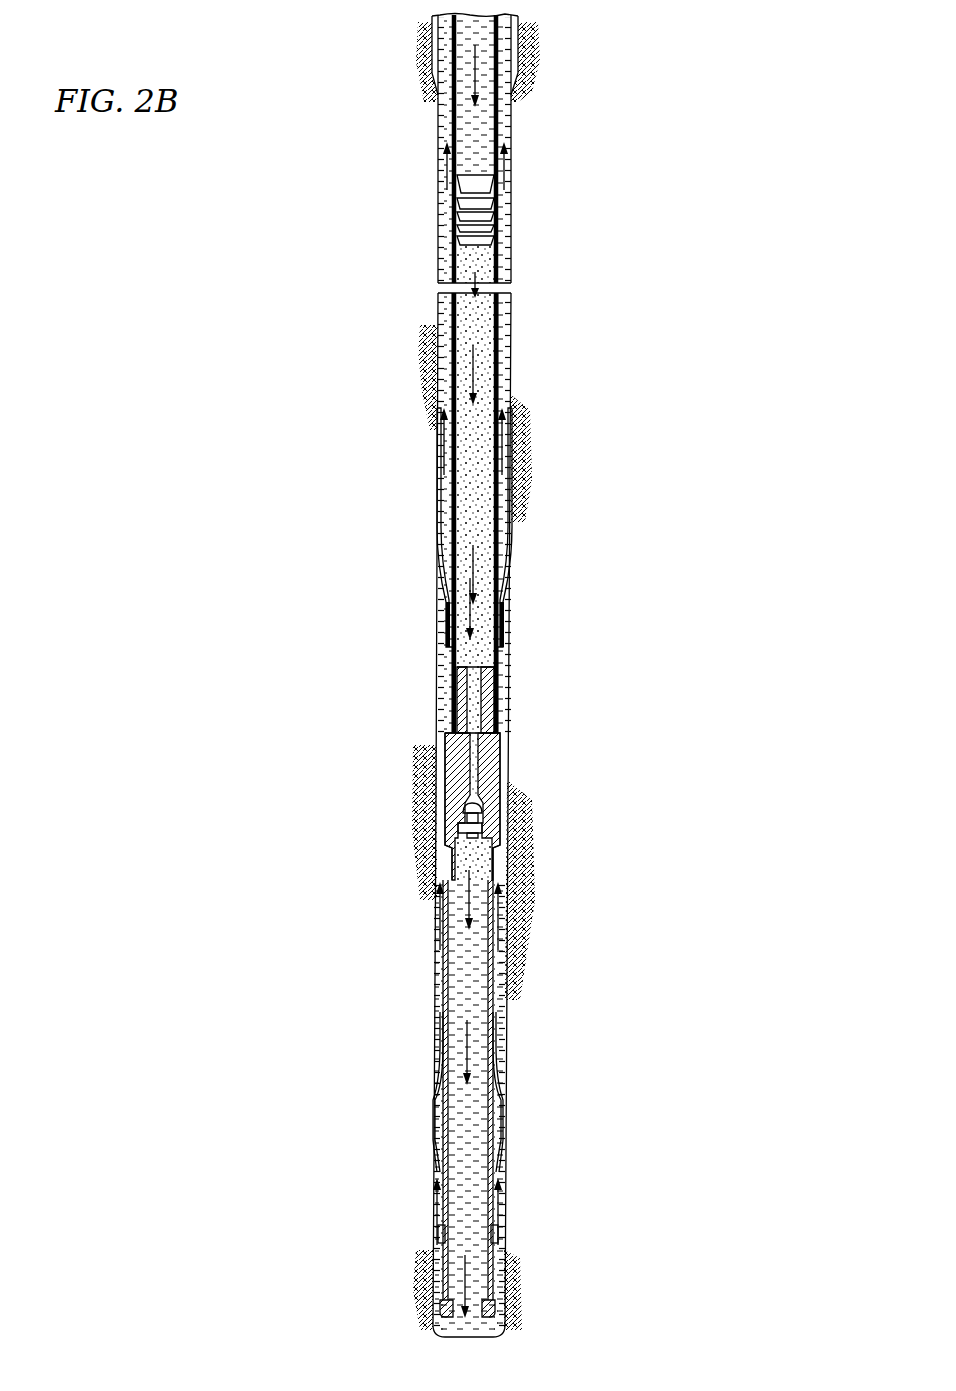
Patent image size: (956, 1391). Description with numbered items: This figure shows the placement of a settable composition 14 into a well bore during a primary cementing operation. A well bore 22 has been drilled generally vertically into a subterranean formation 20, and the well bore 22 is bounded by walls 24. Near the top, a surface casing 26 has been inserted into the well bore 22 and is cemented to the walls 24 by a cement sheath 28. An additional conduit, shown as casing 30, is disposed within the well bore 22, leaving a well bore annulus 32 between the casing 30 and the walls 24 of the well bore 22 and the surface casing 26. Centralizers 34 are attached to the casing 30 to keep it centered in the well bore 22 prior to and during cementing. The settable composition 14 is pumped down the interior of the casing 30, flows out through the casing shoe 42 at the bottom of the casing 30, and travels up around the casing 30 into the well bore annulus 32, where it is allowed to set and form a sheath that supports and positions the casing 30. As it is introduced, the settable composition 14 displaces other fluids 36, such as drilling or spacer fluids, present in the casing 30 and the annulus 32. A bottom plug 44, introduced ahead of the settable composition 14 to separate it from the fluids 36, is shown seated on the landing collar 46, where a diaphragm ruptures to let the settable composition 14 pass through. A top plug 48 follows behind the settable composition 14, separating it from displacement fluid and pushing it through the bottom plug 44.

The settable composition 14 is at (474, 368).
The subterranean formation 20 is at (621, 679).
The well bore 22 is at (522, 508).
The walls 24 is at (505, 243).
The surface casing 26 is at (510, 30).
The cement sheath 28 is at (523, 47).
The casing 30 is at (497, 397).
The well bore annulus 32 is at (443, 485).
The centralizers 34 is at (433, 1068).
The fluids 36 is at (469, 868).
The casing shoe 42 is at (432, 1264).
The bottom plug 44 is at (455, 687).
The landing collar 46 is at (455, 765).
The top plug 48 is at (443, 224).